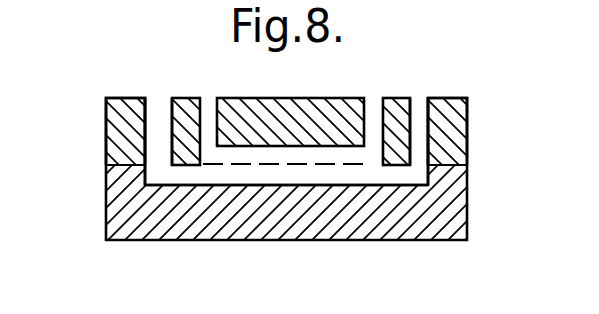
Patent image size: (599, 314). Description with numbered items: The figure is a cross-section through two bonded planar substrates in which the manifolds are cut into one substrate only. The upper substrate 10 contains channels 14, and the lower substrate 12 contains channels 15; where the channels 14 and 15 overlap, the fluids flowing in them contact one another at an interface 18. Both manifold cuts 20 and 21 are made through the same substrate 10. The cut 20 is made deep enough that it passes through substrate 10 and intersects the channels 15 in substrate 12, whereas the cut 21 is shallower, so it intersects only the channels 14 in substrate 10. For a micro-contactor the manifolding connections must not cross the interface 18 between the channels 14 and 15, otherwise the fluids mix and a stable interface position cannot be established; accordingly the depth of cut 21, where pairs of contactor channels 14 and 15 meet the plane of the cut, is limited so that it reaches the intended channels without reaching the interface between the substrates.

The substrate 10 is at (120, 138).
The substrate 12 is at (120, 203).
The channels 14 is at (360, 153).
The channels 15 is at (187, 173).
The interface 18 is at (285, 163).
The manifold cut 20 is at (157, 107).
The manifold cut 21 is at (208, 108).